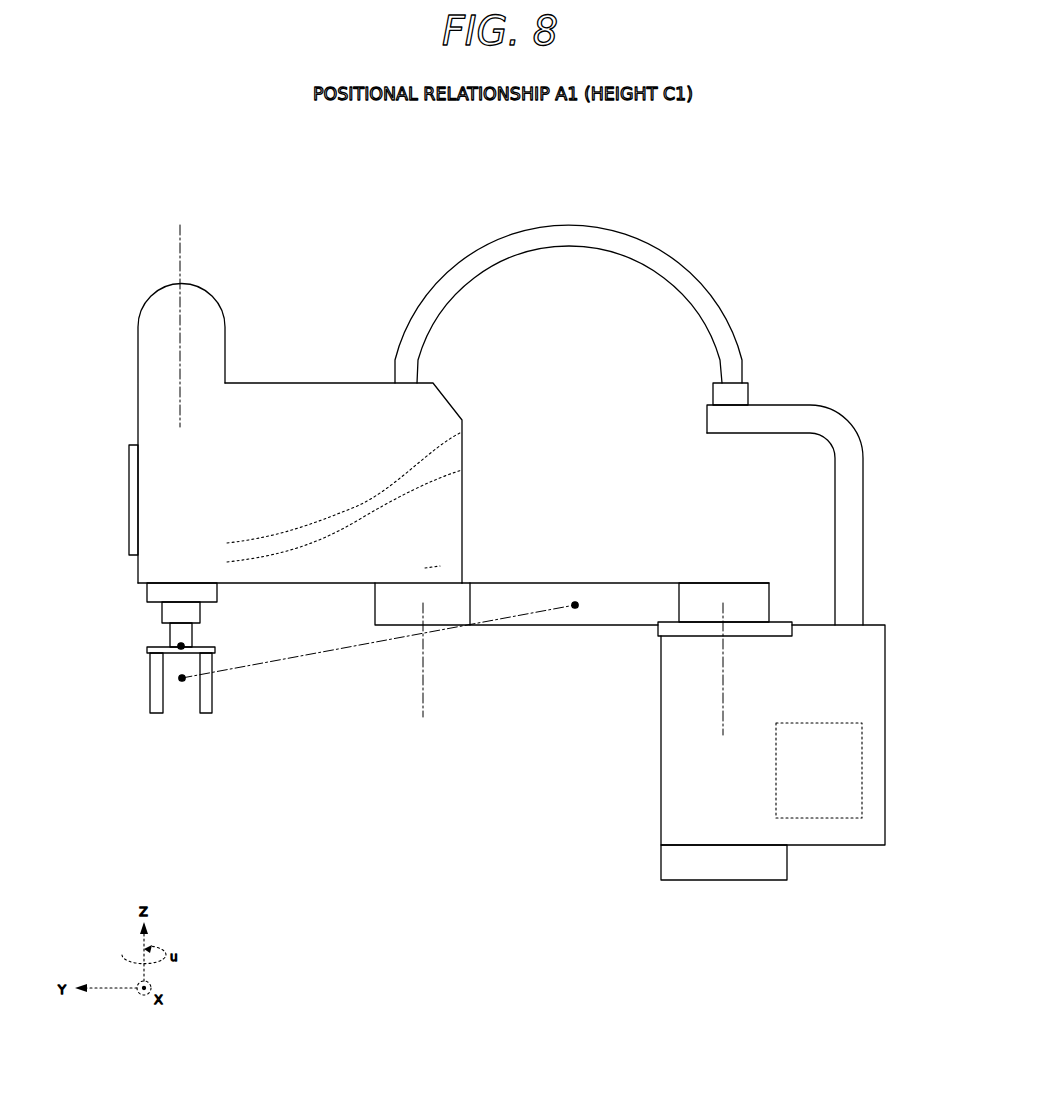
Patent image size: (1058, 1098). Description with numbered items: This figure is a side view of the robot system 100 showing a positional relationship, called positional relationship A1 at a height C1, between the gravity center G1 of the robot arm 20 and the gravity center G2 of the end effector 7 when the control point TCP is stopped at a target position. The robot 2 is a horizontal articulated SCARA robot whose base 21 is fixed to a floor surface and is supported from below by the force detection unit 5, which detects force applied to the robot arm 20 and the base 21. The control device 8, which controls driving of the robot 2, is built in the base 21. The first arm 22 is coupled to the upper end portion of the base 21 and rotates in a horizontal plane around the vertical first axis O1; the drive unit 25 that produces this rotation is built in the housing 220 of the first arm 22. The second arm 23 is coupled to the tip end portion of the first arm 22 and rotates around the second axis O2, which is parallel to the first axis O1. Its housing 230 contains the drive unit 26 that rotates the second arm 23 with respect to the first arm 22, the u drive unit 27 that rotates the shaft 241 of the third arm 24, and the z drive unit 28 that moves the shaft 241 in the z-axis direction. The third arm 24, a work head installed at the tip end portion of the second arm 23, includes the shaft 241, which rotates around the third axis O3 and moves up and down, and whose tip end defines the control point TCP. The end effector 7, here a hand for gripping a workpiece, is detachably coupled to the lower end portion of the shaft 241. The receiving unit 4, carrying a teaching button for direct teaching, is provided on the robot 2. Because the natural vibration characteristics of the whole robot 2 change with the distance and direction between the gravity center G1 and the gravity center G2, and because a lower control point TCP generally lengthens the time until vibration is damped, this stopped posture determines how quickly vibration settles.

The robot system 100 is at (801, 203).
The robot 2 is at (481, 240).
The second arm 23 is at (160, 393).
The housing 230 is at (306, 380).
The receiving unit 4 is at (129, 500).
The z drive unit 28 is at (462, 434).
The u drive unit 27 is at (462, 470).
The drive unit 26 is at (425, 568).
The third axis O3 is at (182, 235).
The robot arm 20 is at (567, 609).
The housing 220 is at (645, 603).
The drive unit 25 is at (738, 600).
The first arm 22 is at (598, 608).
The base 21 is at (855, 668).
The first axis O1 is at (723, 715).
The control device 8 is at (862, 775).
The force detection unit 5 is at (690, 860).
The third arm 24 is at (178, 612).
The shaft 241 is at (192, 633).
The control point TCP is at (176, 642).
The end effector 7 is at (222, 687).
The gravity center G2 is at (182, 682).
The gravity center G1 is at (575, 610).
The second axis O2 is at (423, 660).